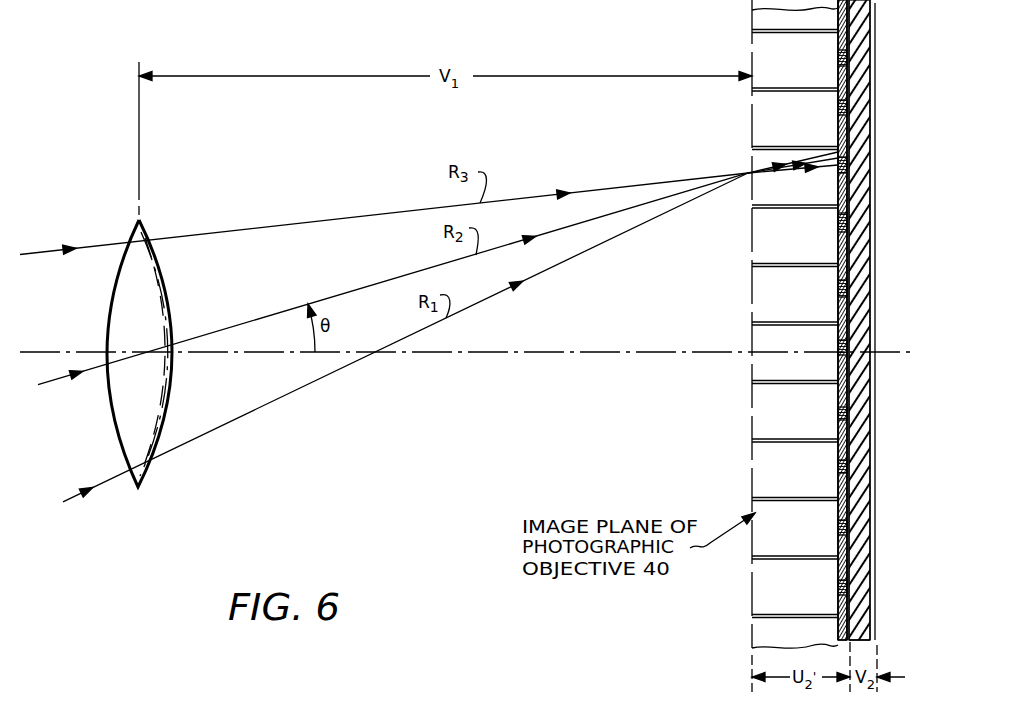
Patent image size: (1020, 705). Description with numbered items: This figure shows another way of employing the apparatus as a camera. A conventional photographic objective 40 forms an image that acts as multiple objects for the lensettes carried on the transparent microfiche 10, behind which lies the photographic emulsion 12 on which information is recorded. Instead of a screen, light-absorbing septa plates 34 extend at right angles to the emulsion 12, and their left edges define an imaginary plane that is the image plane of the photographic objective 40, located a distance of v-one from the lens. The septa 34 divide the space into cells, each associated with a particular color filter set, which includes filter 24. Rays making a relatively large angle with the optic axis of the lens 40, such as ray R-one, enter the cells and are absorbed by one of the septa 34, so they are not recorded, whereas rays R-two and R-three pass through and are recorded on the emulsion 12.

The photographic objective 40 is at (150, 297).
The light-absorbing septa plates 34 is at (788, 31).
The color filter 24 is at (838, 233).
The microfiche 10 is at (863, 107).
The photographic emulsion 12 is at (873, 220).